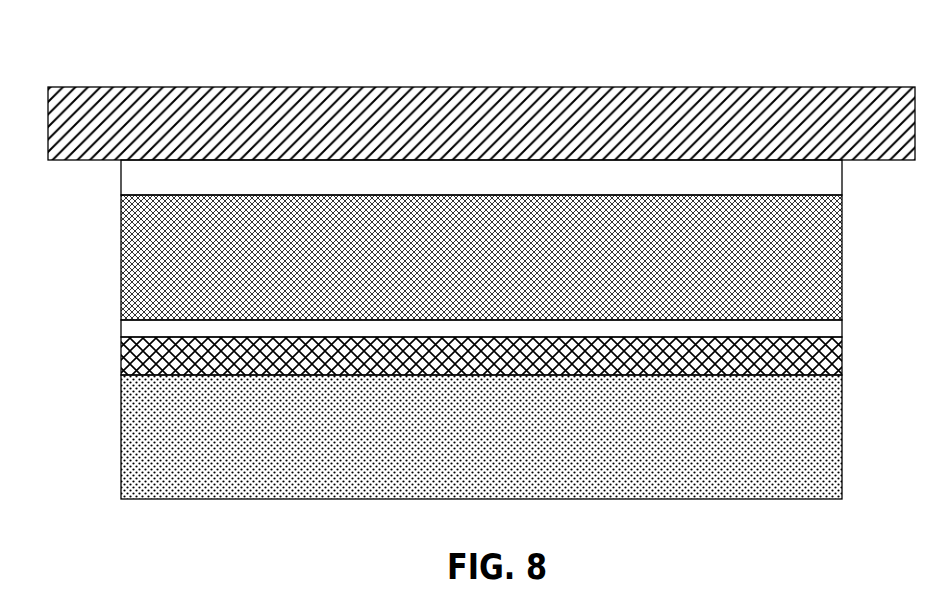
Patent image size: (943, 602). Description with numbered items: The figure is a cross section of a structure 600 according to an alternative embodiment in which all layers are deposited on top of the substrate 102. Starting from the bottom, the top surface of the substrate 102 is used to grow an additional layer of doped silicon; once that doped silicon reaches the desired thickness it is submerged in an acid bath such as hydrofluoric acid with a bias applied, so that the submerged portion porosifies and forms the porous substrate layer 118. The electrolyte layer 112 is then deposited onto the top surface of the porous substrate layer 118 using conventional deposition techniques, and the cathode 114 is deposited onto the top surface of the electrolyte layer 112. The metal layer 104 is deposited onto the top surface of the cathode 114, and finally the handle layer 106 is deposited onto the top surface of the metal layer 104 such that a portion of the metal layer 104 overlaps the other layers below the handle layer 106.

The structure 600 is at (101, 46).
The handle layer 106 is at (887, 134).
The metal layer 104 is at (827, 188).
The cathode 114 is at (821, 300).
The electrolyte layer 112 is at (142, 330).
The porous substrate layer 118 is at (821, 370).
The substrate 102 is at (817, 470).